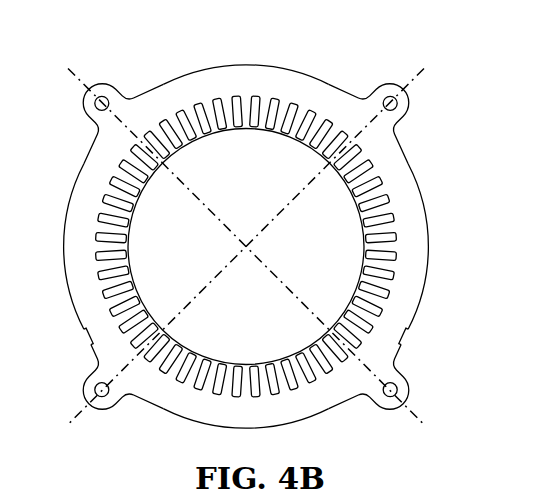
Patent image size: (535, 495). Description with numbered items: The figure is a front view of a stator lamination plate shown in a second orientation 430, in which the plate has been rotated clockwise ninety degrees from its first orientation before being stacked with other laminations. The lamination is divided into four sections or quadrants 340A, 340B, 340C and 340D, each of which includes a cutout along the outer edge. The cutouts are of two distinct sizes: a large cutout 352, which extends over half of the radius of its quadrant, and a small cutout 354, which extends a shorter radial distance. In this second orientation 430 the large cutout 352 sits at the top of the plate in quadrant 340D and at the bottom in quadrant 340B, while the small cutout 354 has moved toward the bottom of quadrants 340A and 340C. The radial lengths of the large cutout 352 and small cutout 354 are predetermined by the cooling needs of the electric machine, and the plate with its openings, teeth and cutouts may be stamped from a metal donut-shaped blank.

The second orientation 430 is at (84, 147).
The large cutout 352 is at (263, 52).
The small cutout 354 is at (70, 338).
The quadrant 340A is at (329, 246).
The quadrant 340B is at (246, 335).
The quadrant 340C is at (162, 246).
The quadrant 340D is at (246, 160).